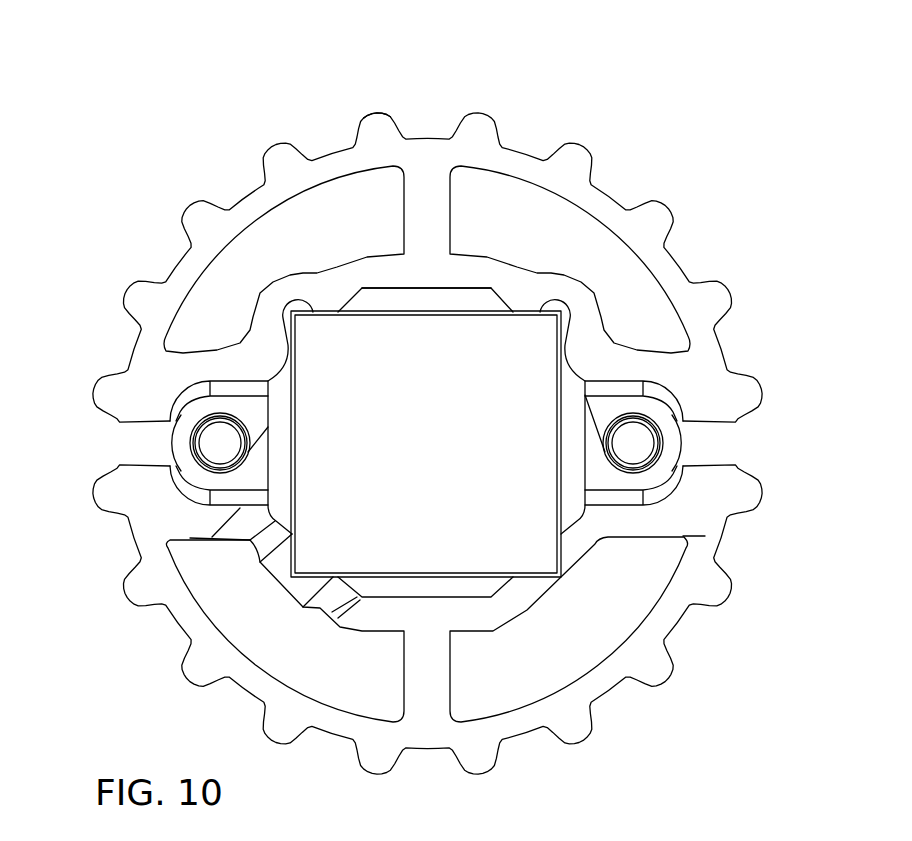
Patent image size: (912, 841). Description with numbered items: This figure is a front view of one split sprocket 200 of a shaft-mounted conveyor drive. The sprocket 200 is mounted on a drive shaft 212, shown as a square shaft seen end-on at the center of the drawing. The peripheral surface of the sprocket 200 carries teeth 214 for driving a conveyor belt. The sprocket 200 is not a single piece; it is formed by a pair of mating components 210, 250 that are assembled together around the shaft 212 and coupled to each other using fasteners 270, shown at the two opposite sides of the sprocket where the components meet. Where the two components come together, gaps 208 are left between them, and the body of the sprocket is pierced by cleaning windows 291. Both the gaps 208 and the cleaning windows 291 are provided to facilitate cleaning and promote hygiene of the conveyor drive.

The split sprocket 200 is at (638, 140).
The gap 208 is at (130, 443).
The mating component 210 is at (193, 360).
The drive shaft 212 is at (420, 437).
The teeth 214 is at (477, 128).
The mating component 250 is at (177, 517).
The fastener 270 is at (222, 441).
The cleaning window 291 is at (277, 417).